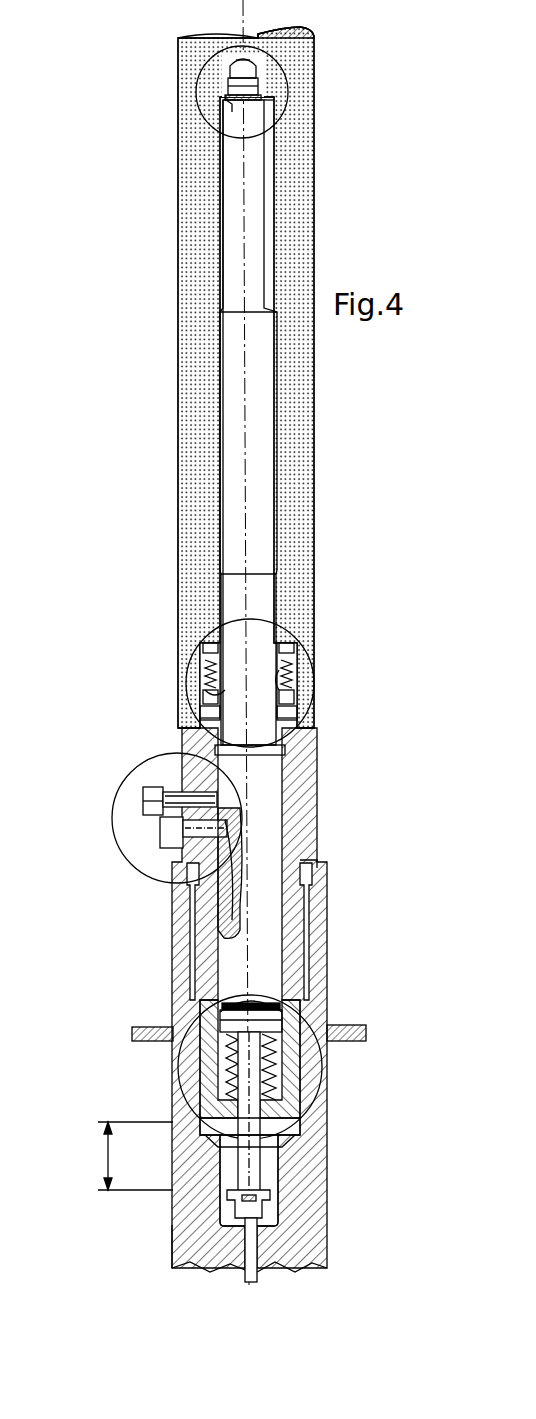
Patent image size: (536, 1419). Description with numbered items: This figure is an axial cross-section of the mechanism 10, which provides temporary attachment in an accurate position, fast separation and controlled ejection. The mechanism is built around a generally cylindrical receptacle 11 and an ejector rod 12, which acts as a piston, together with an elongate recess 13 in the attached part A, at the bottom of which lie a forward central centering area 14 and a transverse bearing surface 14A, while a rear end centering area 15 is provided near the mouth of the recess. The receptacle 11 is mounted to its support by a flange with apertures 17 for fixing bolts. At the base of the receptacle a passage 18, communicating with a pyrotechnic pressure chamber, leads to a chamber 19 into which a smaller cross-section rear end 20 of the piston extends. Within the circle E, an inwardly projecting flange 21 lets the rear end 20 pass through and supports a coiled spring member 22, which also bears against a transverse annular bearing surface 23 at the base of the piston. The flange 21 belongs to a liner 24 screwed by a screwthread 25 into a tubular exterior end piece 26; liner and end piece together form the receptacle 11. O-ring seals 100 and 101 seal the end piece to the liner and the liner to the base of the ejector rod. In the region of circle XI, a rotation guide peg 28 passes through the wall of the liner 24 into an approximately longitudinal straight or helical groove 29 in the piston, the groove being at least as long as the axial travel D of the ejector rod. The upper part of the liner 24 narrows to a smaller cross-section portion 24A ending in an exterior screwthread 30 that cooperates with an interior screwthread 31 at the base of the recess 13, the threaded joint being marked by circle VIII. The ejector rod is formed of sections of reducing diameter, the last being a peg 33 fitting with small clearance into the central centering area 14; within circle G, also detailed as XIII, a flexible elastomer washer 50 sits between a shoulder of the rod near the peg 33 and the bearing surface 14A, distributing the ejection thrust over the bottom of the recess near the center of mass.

The mechanism 10 is at (66, 1032).
The receptacle 11 is at (172, 898).
The ejector rod 12 is at (215, 455).
The elongate recess 13 is at (228, 527).
The forward central centering area 14 is at (178, 90).
The transverse bearing surface 14A is at (178, 140).
The rear end centering area 15 is at (224, 690).
The apertures 17 is at (158, 1027).
The passage 18 is at (252, 1272).
The chamber 19 is at (272, 1168).
The smaller cross-section rear end 20 is at (278, 1170).
The inwardly projecting flange 21 is at (227, 1123).
The spring member 22 is at (293, 1065).
The transverse annular bearing surface 23 is at (205, 1065).
The liner 24 is at (193, 935).
The smaller cross-section portion 24A is at (300, 690).
The screwthread 25 is at (310, 863).
The tubular exterior end piece 26 is at (172, 1225).
The rotation guide peg 28 is at (187, 867).
The groove 29 is at (232, 870).
The exterior screwthread 30 is at (292, 672).
The interior screwthread 31 is at (280, 630).
The peg 33 is at (282, 97).
The washer 50 is at (282, 103).
The O-ring seal 100 is at (300, 1093).
The O-ring seal 101 is at (308, 950).
The upper housing A is at (178, 412).
The axial travel D is at (130, 1156).
The circle E is at (286, 1005).
The detail circle G is at (178, 57).
The detail circle VIII is at (187, 655).
The detail circle XI is at (110, 798).
The detail circle XIII is at (290, 65).